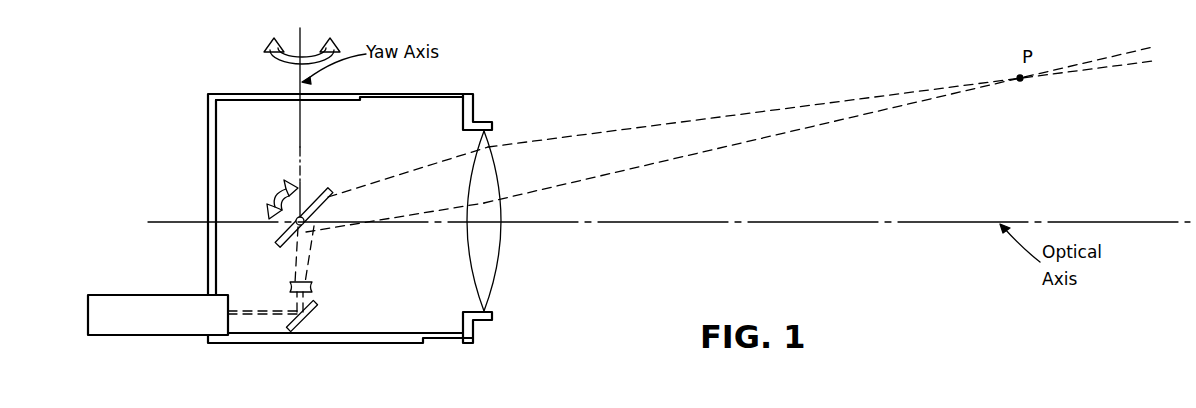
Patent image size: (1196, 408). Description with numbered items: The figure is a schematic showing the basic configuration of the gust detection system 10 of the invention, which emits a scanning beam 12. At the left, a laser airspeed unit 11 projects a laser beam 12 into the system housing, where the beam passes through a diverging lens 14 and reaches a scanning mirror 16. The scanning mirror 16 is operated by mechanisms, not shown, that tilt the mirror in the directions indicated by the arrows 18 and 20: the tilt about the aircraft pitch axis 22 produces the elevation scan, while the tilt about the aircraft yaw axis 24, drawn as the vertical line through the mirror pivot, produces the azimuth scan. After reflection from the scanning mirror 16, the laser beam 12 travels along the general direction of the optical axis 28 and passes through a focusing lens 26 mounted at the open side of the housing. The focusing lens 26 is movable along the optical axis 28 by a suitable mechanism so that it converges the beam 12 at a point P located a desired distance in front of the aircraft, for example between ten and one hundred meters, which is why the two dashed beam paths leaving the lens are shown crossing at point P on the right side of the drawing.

The gust detection system 10 is at (183, 137).
The laser airspeed unit 11 is at (143, 295).
The laser beam 12 is at (258, 310).
The diverging lens 14 is at (313, 285).
The scanning mirror 16 is at (318, 196).
The arrow 18 is at (281, 190).
The arrow 20 is at (326, 48).
The aircraft pitch axis 22 is at (312, 228).
The aircraft yaw axis 24 is at (303, 142).
The focusing lens 26 is at (501, 249).
The optical axis 28 is at (683, 226).